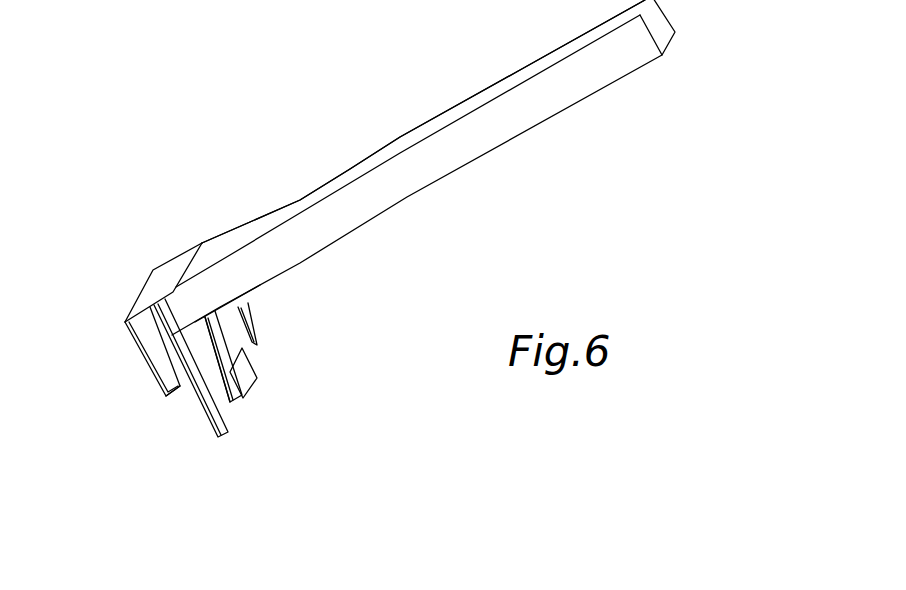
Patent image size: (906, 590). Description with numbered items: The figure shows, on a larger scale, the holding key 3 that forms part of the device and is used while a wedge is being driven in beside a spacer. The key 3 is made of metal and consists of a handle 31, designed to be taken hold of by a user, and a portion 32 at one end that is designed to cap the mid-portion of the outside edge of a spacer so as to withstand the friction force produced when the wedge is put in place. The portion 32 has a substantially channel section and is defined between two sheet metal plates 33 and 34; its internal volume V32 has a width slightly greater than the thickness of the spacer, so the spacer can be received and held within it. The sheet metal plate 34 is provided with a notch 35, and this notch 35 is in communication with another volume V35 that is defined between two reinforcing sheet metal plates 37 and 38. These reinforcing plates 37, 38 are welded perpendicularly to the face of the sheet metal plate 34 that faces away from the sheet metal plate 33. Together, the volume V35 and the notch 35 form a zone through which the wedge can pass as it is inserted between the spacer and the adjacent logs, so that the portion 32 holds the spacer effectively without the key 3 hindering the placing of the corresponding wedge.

The key 3 is at (282, 173).
The handle 31 is at (583, 78).
The portion 32 is at (133, 288).
The sheet metal plate 33 is at (145, 360).
The sheet metal plate 34 is at (187, 373).
The notch 35 is at (244, 406).
The reinforcing sheet metal plate 37 is at (220, 377).
The reinforcing sheet metal plate 38 is at (242, 318).
The internal volume V32 is at (185, 397).
The volume V35 is at (240, 348).